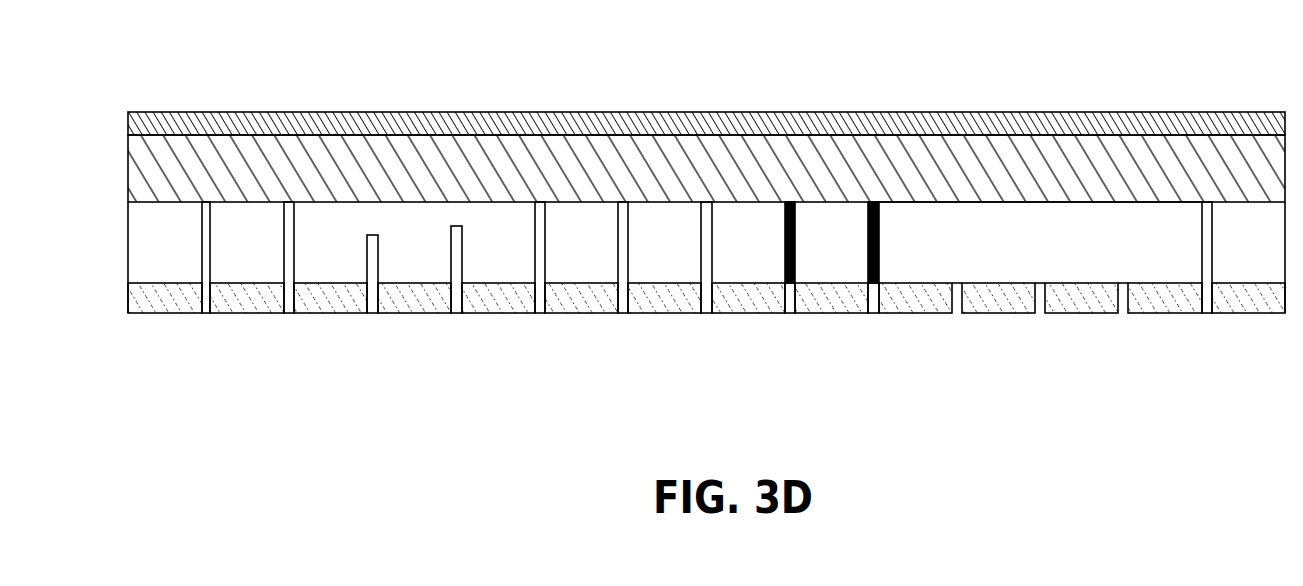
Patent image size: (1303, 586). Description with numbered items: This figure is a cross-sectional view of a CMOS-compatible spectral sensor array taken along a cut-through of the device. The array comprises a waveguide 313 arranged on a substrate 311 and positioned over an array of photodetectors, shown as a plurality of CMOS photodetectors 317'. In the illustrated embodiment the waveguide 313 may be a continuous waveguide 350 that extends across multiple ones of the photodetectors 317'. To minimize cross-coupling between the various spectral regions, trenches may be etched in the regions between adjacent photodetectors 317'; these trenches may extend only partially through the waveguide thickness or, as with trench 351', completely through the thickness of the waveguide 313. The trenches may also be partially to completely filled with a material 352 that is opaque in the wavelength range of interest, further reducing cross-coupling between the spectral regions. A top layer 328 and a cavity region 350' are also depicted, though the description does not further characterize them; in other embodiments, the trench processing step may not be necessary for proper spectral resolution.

The substrate 311 is at (126, 167).
The waveguide 313 is at (126, 238).
The top layer 328 is at (360, 110).
The opaque material 352 is at (796, 232).
The complete trench 351' is at (414, 307).
The cavity 350' is at (685, 332).
The continuous waveguide 350 is at (1040, 302).
The CMOS photodetector 317' is at (853, 332).